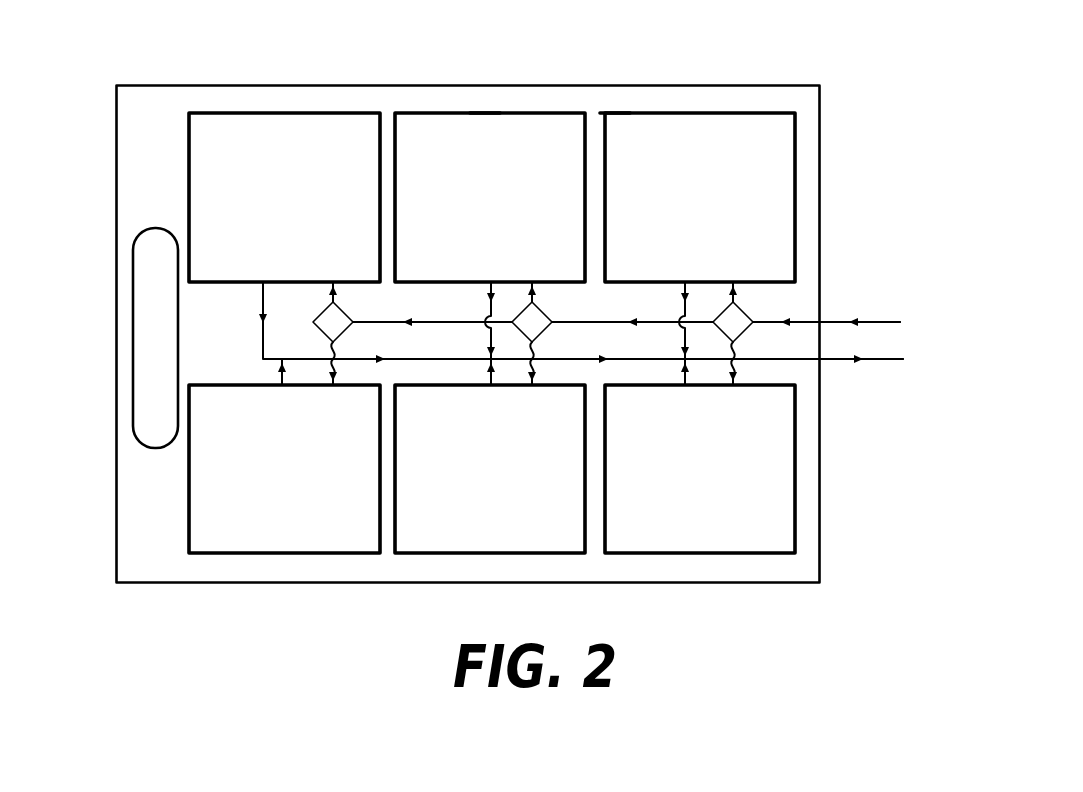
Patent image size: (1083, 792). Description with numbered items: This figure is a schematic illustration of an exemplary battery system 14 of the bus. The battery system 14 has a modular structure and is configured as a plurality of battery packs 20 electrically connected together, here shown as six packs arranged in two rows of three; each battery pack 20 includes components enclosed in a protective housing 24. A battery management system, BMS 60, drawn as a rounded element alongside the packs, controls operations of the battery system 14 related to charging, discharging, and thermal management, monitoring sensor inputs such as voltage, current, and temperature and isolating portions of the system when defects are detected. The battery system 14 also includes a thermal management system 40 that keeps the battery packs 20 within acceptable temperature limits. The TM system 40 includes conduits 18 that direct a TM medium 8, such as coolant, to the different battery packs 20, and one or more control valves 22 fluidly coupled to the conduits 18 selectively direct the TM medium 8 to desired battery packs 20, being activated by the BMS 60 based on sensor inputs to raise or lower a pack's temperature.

The TM medium 8 is at (789, 314).
The battery system 14 is at (835, 128).
The conduits 18 is at (884, 302).
The battery packs 20 is at (711, 485).
The control valves 22 is at (742, 334).
The protective housing 24 is at (487, 113).
The thermal management system 40 is at (896, 343).
The battery management system 60 is at (155, 285).